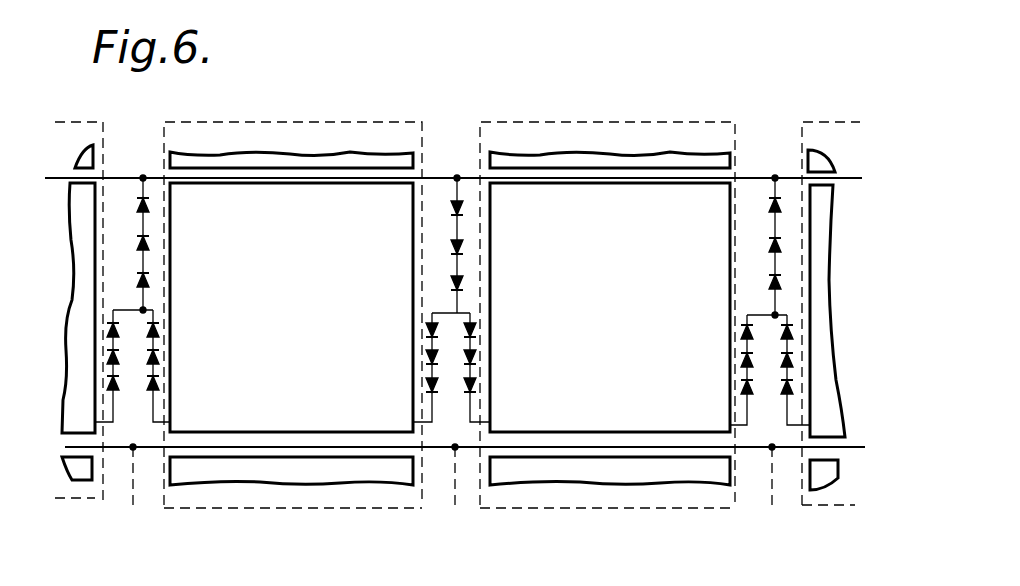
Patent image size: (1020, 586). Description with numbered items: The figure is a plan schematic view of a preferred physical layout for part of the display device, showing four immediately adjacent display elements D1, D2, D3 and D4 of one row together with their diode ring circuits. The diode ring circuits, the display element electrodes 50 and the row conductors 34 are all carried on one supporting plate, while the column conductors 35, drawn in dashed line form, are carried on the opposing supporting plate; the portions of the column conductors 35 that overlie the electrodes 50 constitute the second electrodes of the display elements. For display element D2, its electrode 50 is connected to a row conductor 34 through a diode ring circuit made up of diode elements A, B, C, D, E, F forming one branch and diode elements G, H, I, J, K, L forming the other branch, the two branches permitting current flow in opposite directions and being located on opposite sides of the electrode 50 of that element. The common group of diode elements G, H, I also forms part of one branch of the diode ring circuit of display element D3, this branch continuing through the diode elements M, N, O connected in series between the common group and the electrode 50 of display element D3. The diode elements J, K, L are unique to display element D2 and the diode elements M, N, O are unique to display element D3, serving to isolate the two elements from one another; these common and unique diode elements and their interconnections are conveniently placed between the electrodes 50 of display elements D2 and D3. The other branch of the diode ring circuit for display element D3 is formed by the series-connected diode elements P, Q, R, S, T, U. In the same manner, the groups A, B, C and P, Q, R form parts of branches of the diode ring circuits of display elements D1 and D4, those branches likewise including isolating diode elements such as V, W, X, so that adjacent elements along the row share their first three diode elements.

The row conductor 34 is at (840, 178).
The column conductor 35 is at (95, 500).
The display element electrode 50 is at (494, 196).
The display element D1 is at (72, 307).
The display element D2 is at (291, 305).
The display element D3 is at (609, 305).
The display element D4 is at (840, 272).
The diode element A is at (133, 206).
The diode element B is at (133, 244).
The diode element C is at (133, 281).
The diode element D is at (158, 330).
The diode element E is at (158, 357).
The diode element F is at (158, 383).
The diode element G is at (447, 209).
The diode element H is at (447, 248).
The diode element I is at (449, 284).
The diode element J is at (426, 330).
The diode element K is at (426, 357).
The diode element L is at (426, 385).
The diode element M is at (476, 330).
The diode element N is at (476, 357).
The diode element O is at (476, 385).
The diode element P is at (765, 206).
The diode element Q is at (765, 246).
The diode element R is at (765, 283).
The diode element S is at (741, 332).
The diode element T is at (741, 360).
The diode element U is at (741, 387).
The diode element V is at (793, 332).
The diode element W is at (793, 360).
The diode element X is at (793, 387).